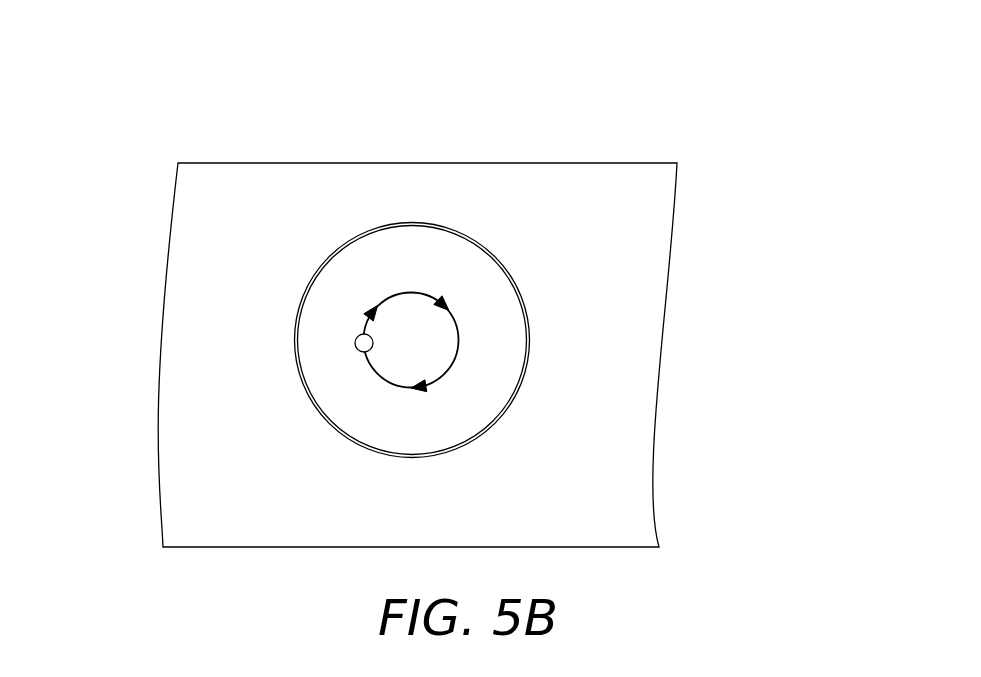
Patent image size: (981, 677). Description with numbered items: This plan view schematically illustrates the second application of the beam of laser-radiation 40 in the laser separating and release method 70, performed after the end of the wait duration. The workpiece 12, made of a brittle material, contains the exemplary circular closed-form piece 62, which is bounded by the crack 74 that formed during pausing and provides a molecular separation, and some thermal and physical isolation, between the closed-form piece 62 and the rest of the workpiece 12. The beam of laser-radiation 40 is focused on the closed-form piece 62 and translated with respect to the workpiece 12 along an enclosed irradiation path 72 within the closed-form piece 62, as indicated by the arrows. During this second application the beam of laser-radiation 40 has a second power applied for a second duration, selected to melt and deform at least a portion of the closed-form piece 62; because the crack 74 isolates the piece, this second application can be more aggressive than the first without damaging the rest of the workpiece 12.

The laser separating and release method 70 is at (640, 106).
The workpiece 12 is at (183, 238).
The closed-form piece 62 is at (322, 280).
The crack 74 is at (515, 278).
The irradiation path 72 is at (453, 363).
The beam of laser-radiation 40 is at (357, 349).